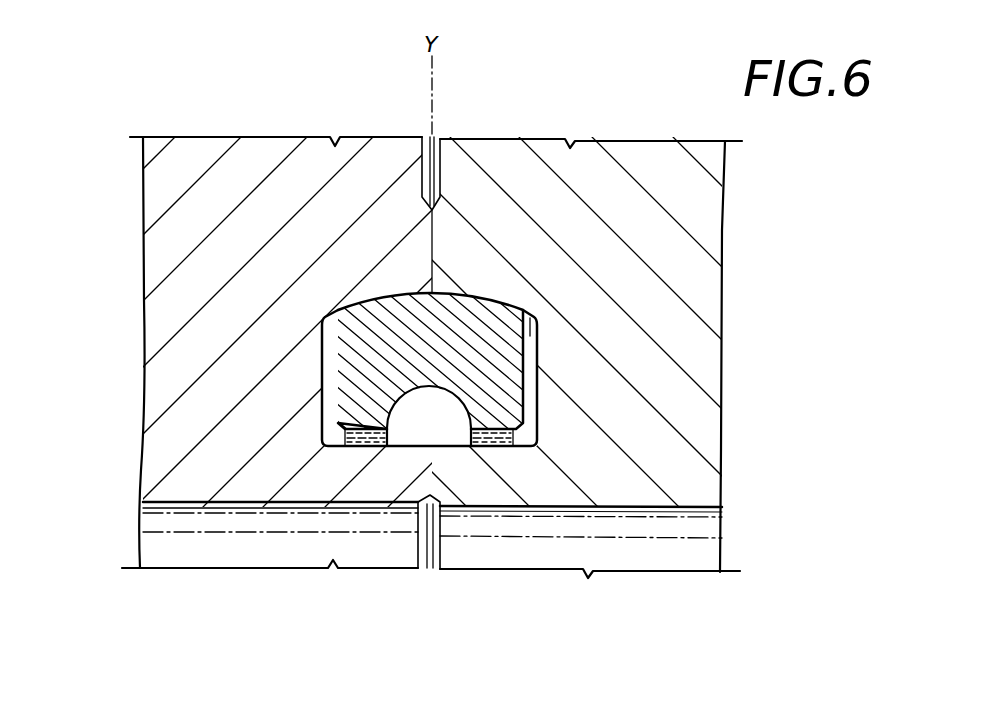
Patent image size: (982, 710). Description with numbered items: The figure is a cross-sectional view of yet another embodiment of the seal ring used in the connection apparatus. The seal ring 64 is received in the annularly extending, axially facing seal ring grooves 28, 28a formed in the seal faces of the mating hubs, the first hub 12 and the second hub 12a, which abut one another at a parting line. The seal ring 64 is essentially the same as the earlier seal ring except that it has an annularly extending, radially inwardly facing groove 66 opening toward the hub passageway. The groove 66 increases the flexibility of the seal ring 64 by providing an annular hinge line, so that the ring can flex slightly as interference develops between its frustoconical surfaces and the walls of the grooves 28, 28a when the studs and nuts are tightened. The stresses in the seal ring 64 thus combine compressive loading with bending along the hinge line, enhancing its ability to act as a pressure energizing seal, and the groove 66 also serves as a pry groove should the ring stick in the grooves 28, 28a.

The first hub 12 is at (703, 280).
The second hub 12a is at (155, 322).
The seal ring 64 is at (500, 353).
The seal ring groove 28 is at (535, 420).
The seal ring groove 28a is at (318, 442).
The groove 66 is at (408, 427).